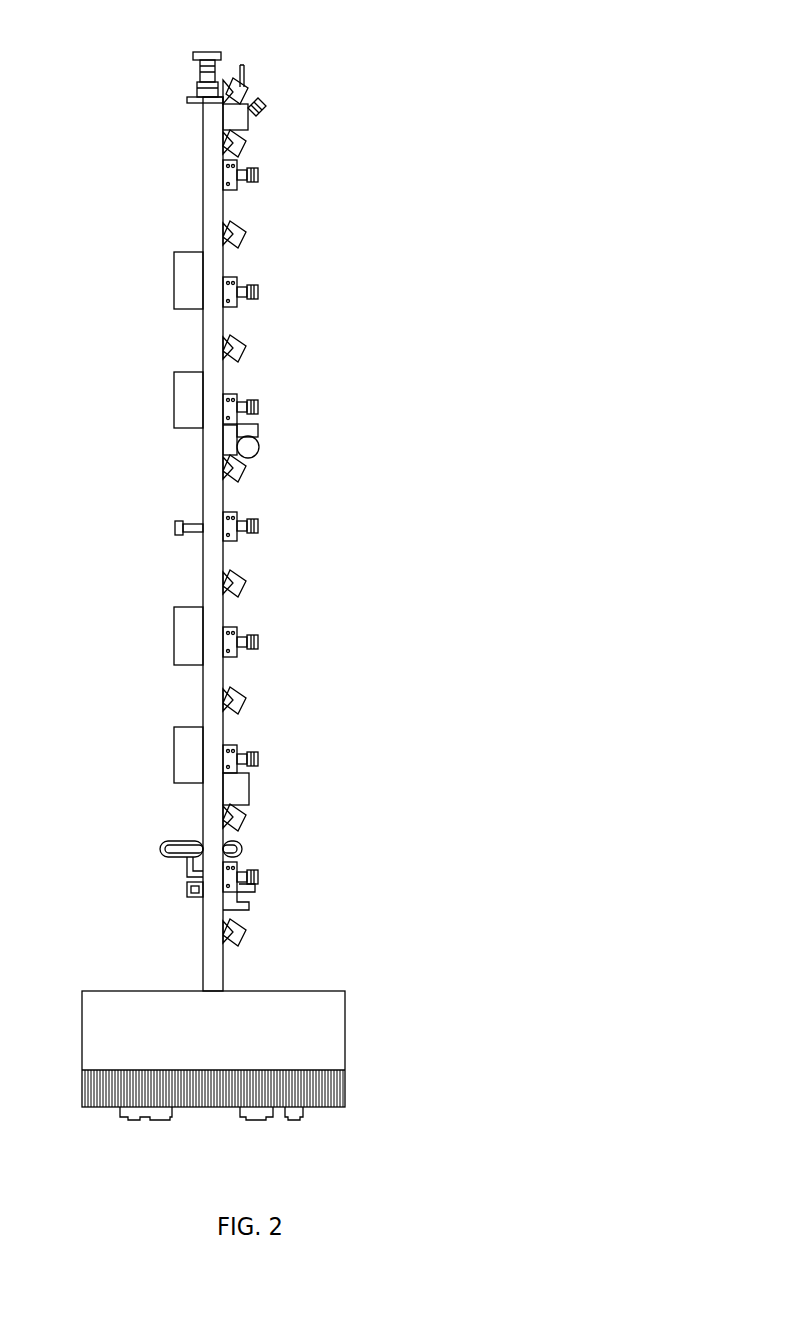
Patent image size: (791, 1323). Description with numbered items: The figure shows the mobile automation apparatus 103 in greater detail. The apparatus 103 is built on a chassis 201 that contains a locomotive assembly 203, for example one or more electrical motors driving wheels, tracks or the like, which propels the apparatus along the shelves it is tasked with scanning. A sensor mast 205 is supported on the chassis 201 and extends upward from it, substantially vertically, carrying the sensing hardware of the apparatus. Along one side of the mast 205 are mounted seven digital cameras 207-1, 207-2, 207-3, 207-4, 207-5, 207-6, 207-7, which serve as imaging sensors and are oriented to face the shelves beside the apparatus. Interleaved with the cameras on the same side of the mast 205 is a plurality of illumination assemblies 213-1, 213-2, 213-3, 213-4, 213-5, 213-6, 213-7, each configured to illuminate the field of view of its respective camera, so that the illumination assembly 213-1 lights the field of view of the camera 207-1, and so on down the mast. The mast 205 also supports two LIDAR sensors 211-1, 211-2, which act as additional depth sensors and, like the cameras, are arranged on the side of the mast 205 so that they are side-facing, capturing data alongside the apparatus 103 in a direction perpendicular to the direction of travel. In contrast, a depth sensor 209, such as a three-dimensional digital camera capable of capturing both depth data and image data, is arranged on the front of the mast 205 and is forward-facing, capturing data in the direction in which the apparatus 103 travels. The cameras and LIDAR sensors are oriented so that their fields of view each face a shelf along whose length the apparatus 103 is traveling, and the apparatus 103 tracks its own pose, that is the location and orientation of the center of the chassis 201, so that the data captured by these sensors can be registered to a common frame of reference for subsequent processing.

The mobile automation apparatus 103 is at (338, 46).
The chassis 201 is at (346, 1092).
The locomotive assembly 203 is at (255, 1114).
The sensor mast 205 is at (205, 150).
The digital camera 207-1 is at (259, 177).
The digital camera 207-2 is at (259, 292).
The digital camera 207-3 is at (259, 407).
The digital camera 207-4 is at (259, 526).
The digital camera 207-5 is at (259, 642).
The digital camera 207-6 is at (259, 759).
The digital camera 207-7 is at (259, 877).
The depth sensor 209 is at (178, 849).
The LIDAR sensor 211-1 is at (260, 435).
The LIDAR sensor 211-2 is at (250, 782).
The illumination assembly 213-1 is at (247, 234).
The illumination assembly 213-2 is at (247, 348).
The illumination assembly 213-3 is at (247, 468).
The illumination assembly 213-4 is at (247, 583).
The illumination assembly 213-5 is at (247, 700).
The illumination assembly 213-6 is at (247, 817).
The illumination assembly 213-7 is at (247, 932).